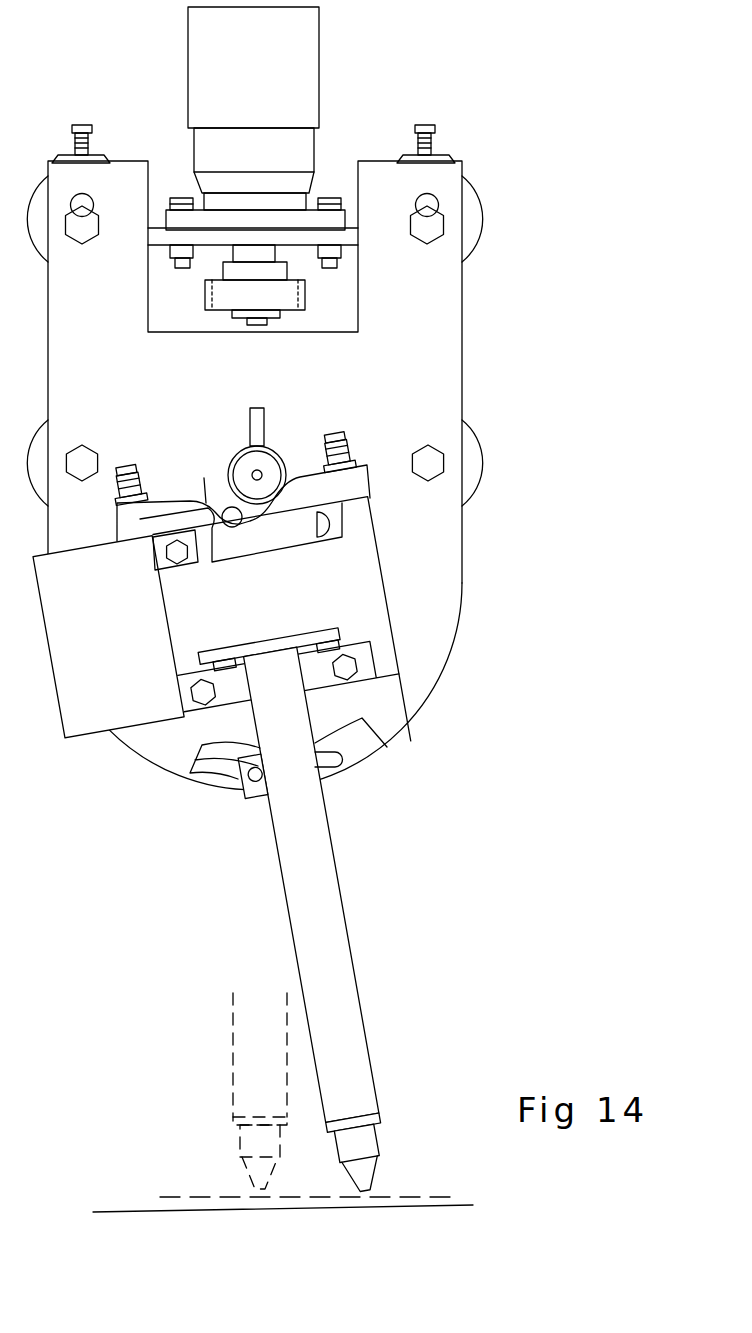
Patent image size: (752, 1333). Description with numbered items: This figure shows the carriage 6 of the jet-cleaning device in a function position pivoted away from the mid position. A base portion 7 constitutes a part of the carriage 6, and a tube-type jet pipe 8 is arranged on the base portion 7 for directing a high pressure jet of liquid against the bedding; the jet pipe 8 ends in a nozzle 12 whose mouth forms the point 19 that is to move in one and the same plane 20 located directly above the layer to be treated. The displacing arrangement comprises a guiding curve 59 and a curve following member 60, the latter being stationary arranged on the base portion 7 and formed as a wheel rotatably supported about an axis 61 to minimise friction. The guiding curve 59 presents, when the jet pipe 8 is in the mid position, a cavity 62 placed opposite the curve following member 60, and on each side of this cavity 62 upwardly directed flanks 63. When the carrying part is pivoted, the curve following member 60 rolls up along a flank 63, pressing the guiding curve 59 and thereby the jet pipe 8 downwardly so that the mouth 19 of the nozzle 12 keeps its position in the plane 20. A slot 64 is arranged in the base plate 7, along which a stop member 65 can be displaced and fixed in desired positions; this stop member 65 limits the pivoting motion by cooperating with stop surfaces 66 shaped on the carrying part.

The carriage 6 is at (558, 208).
The base portion 7 is at (443, 352).
The jet pipe 8 is at (340, 948).
The nozzle 12 is at (362, 1153).
The mouth of the nozzle 19 is at (365, 1198).
The plane 20 is at (433, 1193).
The guiding curve 59 is at (204, 478).
The curve following member 60 is at (245, 465).
The axis 61 is at (259, 473).
The cavity 62 is at (222, 527).
The flanks 63 is at (191, 498).
The slot 64 is at (325, 762).
The stop member 65 is at (253, 788).
The stop surfaces 66 is at (207, 763).